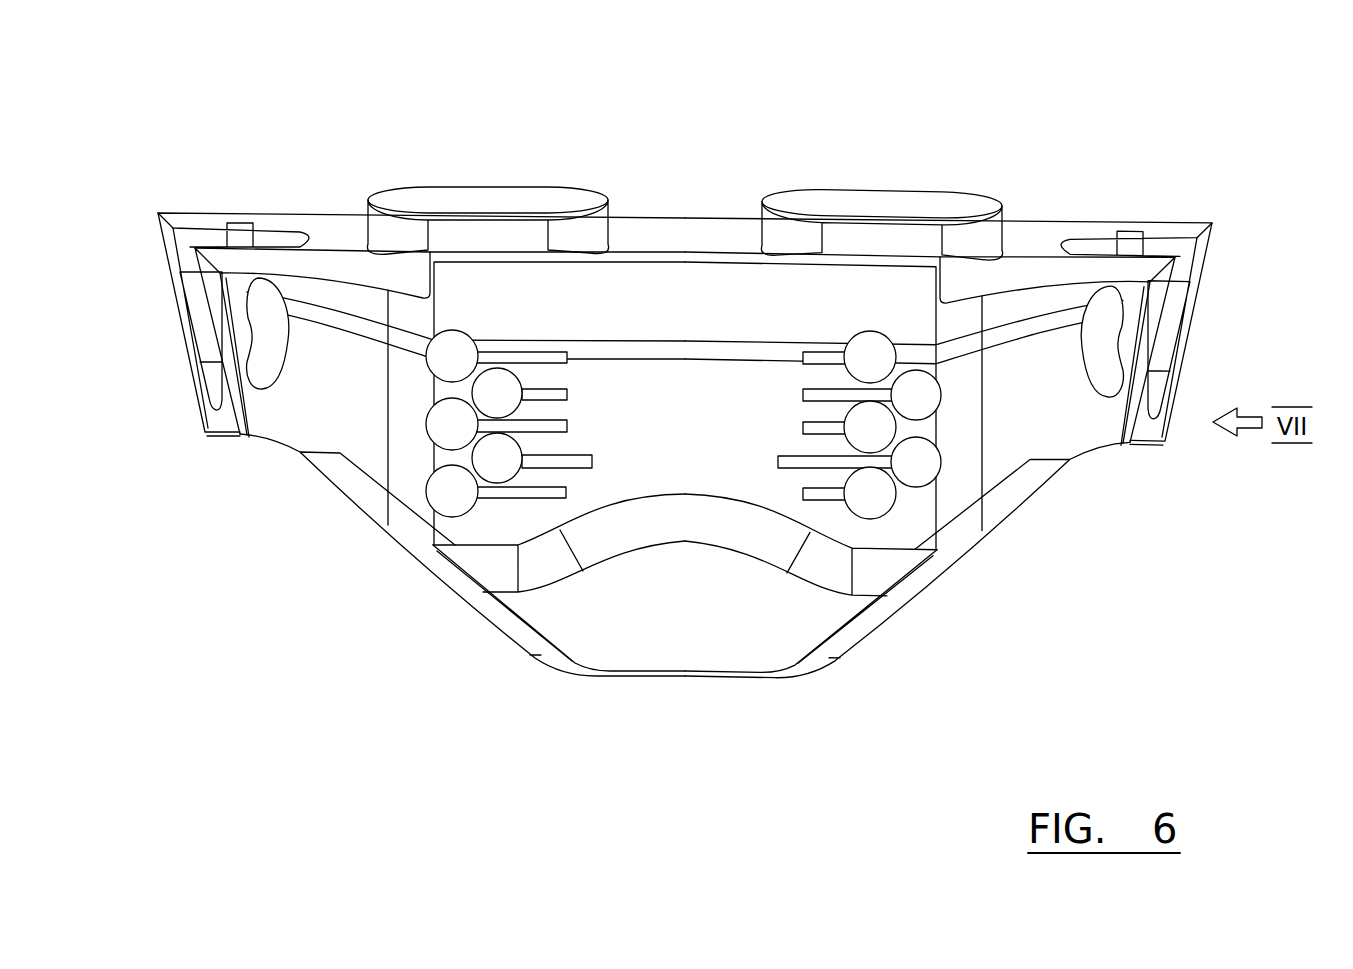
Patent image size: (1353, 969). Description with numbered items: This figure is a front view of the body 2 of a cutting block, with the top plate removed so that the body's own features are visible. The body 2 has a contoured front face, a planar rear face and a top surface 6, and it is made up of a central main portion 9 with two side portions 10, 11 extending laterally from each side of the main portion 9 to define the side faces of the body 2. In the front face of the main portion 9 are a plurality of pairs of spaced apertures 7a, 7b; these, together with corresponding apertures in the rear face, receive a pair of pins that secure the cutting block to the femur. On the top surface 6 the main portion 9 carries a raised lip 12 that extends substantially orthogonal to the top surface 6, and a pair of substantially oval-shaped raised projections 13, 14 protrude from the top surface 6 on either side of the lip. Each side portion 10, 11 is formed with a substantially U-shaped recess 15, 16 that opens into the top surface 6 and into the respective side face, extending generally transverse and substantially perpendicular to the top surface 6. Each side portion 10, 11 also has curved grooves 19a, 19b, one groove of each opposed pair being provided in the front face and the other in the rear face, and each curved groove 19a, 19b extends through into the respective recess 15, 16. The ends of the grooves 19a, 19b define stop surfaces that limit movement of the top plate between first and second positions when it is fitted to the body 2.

The body 2 is at (437, 630).
The top surface 6 is at (712, 237).
The spaced apertures 7a is at (446, 497).
The spaced apertures 7b is at (920, 461).
The main portion 9 is at (672, 468).
The side portion 10 is at (189, 218).
The side portion 11 is at (1206, 232).
The raised lip 12 is at (657, 282).
The oval-shaped raised projection 13 is at (478, 200).
The oval-shaped raised projection 14 is at (921, 200).
The U-shaped recess 15 is at (196, 321).
The U-shaped recess 16 is at (1166, 333).
The curved groove 19a is at (265, 372).
The curved groove 19b is at (1104, 385).